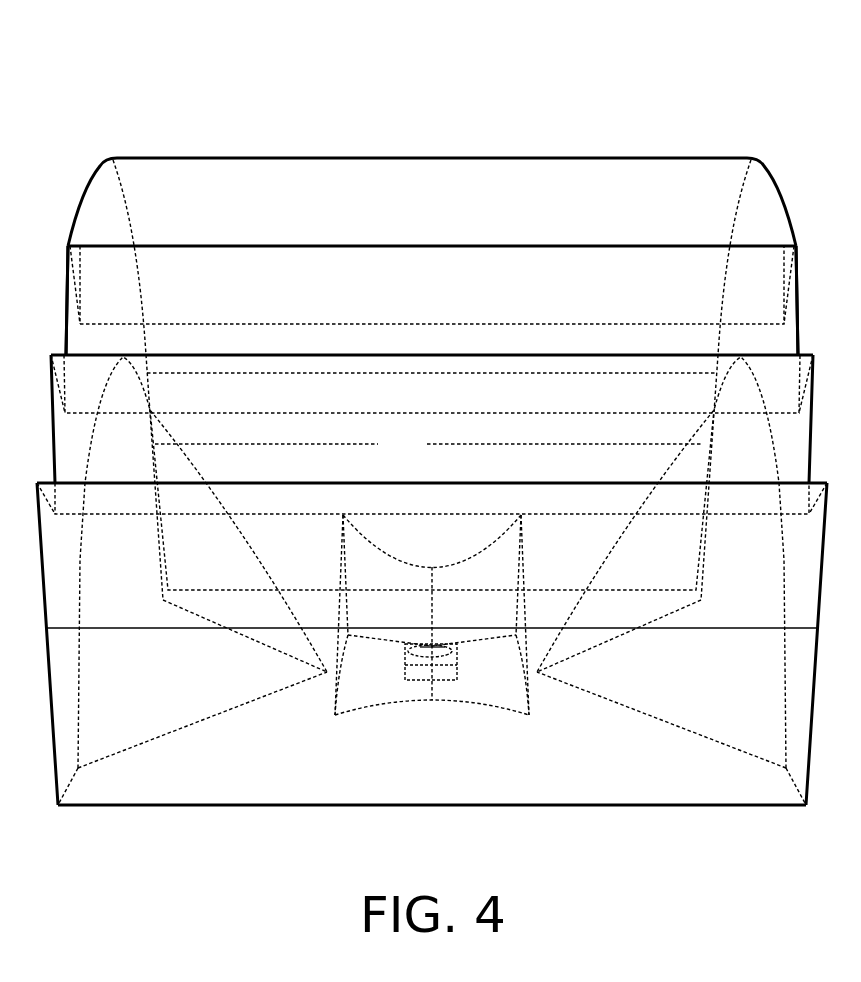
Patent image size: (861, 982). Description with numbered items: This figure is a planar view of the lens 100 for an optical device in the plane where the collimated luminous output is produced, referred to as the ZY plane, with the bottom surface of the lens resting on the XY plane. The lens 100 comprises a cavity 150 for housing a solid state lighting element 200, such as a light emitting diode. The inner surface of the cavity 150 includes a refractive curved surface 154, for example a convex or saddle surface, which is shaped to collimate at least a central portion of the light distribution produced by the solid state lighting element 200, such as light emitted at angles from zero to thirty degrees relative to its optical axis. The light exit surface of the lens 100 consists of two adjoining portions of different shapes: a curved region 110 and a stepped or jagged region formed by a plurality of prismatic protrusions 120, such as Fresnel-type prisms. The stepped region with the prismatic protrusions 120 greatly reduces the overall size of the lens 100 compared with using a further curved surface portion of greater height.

The lens 100 is at (749, 103).
The curved region 110 is at (349, 196).
The prismatic protrusions 120 is at (68, 245).
The cavity 150 is at (360, 680).
The refractive curved surface 154 is at (385, 575).
The solid state lighting element 200 is at (443, 673).